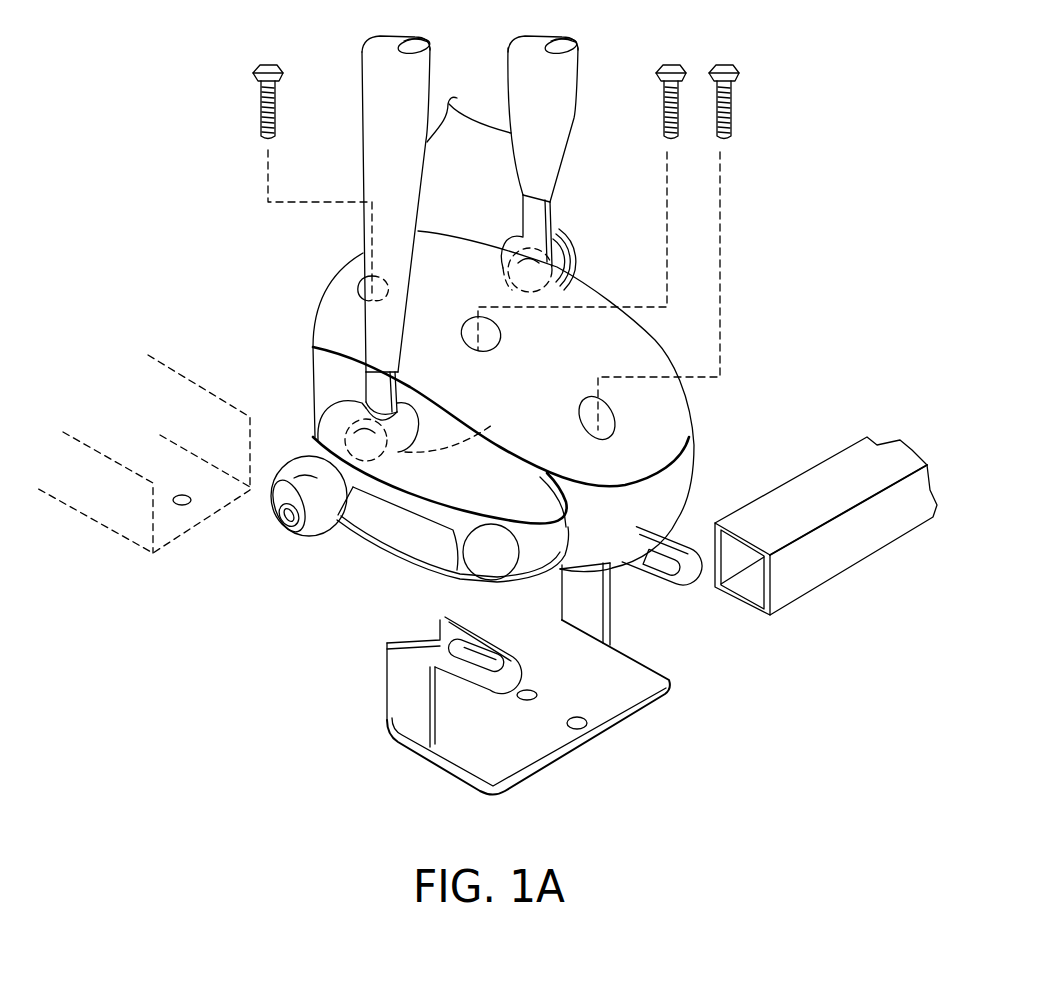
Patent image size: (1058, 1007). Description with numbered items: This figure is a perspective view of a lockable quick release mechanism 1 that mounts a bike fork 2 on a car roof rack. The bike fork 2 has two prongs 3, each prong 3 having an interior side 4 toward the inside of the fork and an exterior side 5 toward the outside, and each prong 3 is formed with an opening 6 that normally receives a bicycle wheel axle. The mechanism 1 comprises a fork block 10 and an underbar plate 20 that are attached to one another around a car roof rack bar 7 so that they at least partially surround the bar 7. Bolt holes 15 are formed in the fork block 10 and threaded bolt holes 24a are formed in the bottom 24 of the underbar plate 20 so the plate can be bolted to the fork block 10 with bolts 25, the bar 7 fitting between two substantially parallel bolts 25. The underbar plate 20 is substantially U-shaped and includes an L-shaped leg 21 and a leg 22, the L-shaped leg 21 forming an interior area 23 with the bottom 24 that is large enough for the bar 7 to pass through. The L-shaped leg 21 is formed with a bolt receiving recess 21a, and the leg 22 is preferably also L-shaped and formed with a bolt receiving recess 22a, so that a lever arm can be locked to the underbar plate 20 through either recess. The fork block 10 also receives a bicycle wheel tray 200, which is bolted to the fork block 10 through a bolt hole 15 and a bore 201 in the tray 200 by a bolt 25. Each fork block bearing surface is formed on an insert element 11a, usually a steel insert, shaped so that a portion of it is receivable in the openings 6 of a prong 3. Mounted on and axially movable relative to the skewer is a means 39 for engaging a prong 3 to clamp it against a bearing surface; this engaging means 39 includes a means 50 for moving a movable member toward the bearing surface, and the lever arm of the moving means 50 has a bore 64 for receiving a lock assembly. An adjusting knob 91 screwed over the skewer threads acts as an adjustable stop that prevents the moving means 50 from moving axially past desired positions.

The lockable quick release mechanism 1 is at (800, 320).
The bike fork 2 is at (456, 66).
The prong 3 is at (469, 112).
The interior side 4 is at (531, 218).
The exterior side 5 is at (560, 242).
The opening 6 is at (583, 253).
The car roof rack bar 7 is at (849, 547).
The fork block 10 is at (688, 430).
The insert element 11a is at (406, 437).
The bolt holes 15 is at (358, 293).
The underbar plate 20 is at (755, 680).
The L-shaped leg 21 is at (420, 657).
The bolt receiving recess 21a is at (480, 655).
The leg 22 is at (598, 603).
The bolt receiving recess 22a is at (667, 556).
The interior area 23 is at (640, 601).
The bottom 24 is at (533, 723).
The threaded bolt holes 24a is at (579, 728).
The bolts 25 is at (258, 63).
The means for engaging a prong 39 is at (283, 444).
The means for moving the movable member 50 is at (355, 552).
The bore 64 is at (492, 545).
The adjusting knob 91 is at (282, 532).
The bicycle wheel tray 200 is at (170, 343).
The bore 201 is at (185, 508).